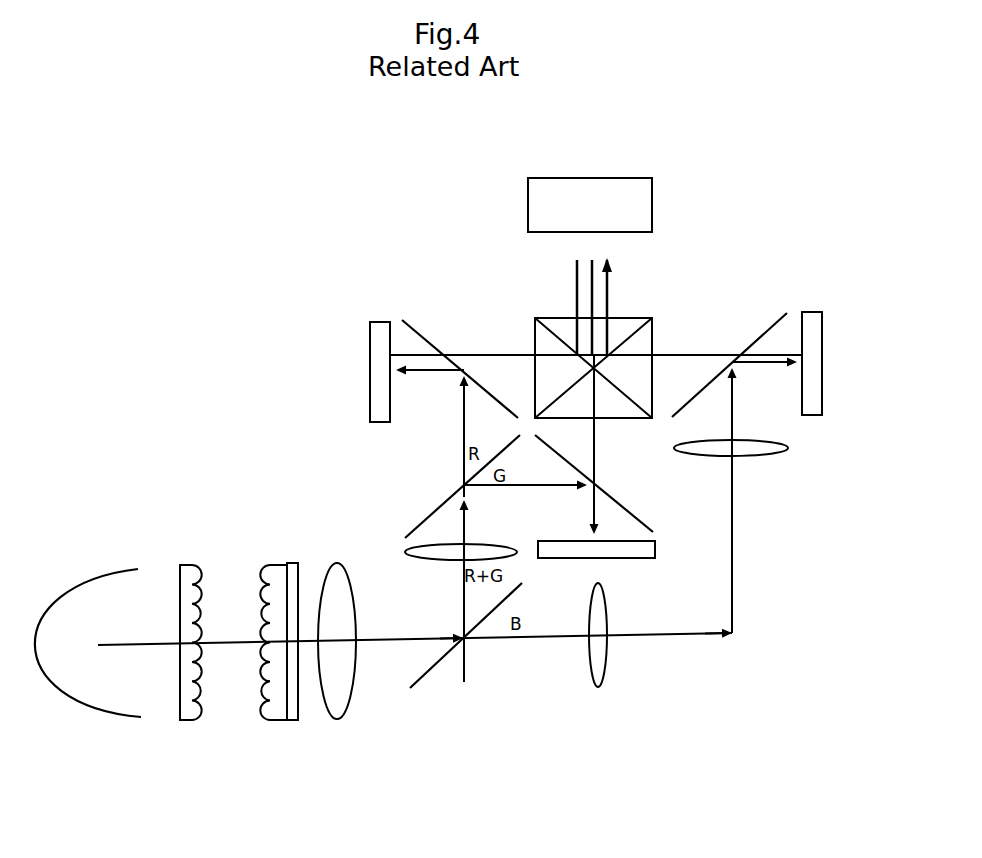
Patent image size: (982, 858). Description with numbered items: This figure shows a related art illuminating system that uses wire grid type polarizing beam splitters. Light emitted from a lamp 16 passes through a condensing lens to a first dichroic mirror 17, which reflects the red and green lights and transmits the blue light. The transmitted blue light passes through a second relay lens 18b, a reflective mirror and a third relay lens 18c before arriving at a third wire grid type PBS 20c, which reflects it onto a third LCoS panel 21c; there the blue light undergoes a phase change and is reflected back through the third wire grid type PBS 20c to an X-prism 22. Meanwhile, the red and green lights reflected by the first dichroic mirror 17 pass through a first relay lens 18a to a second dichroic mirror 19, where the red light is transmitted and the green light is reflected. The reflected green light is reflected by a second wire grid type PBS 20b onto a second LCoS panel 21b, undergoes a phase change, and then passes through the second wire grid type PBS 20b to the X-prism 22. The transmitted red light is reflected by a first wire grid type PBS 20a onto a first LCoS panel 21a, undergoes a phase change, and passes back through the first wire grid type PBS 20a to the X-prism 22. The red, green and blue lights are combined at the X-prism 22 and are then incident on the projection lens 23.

The lamp 16 is at (97, 582).
The first dichroic mirror 17 is at (427, 675).
The first relay lens 18a is at (440, 560).
The second relay lens 18b is at (592, 660).
The third relay lens 18c is at (750, 455).
The second dichroic mirror 19 is at (430, 517).
The first wire grid type PBS 20a is at (431, 343).
The second wire grid type PBS 20b is at (623, 507).
The third wire grid type PBS 20c is at (767, 330).
The first LCoS panel 21a is at (376, 372).
The second LCoS panel 21b is at (633, 553).
The third LCoS panel 21c is at (818, 350).
The X-prism 22 is at (626, 318).
The projection lens 23 is at (652, 205).